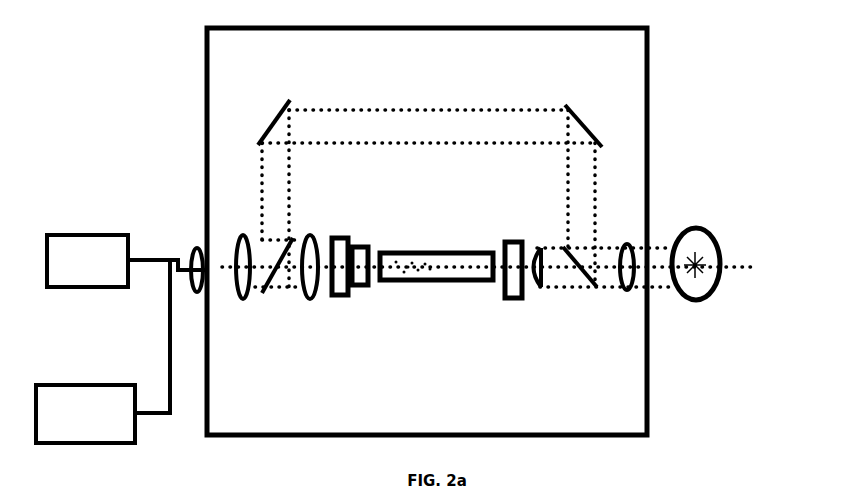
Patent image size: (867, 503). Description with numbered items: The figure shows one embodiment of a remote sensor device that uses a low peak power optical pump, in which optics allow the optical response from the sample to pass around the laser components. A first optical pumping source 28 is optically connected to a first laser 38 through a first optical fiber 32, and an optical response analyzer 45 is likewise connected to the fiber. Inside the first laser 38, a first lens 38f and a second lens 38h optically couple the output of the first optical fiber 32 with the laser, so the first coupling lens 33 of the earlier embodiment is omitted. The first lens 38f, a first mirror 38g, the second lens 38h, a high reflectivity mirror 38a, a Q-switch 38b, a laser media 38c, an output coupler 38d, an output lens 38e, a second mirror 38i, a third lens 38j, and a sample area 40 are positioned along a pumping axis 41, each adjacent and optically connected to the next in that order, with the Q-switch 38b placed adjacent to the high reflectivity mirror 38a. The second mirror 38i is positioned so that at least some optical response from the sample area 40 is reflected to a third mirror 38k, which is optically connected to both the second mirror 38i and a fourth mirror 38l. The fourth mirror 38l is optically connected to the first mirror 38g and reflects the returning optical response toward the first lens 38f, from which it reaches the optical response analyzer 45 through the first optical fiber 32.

The first optical pumping source 28 is at (87, 261).
The first optical fiber 32 is at (150, 259).
The first coupling lens 33 is at (196, 300).
The first laser 38 is at (652, 441).
The high reflectivity mirror 38a is at (351, 236).
The Q-switch 38b is at (357, 291).
The laser media 38c is at (433, 285).
The output coupler 38d is at (518, 235).
The output lens 38e is at (540, 292).
The first lens 38f is at (243, 303).
The first mirror 38g is at (282, 283).
The second lens 38h is at (313, 225).
The second mirror 38i is at (586, 292).
The third lens 38j is at (626, 292).
The third mirror 38k is at (580, 113).
The fourth mirror 38l is at (277, 108).
The sample area 40 is at (711, 233).
The pumping axis 41 is at (746, 273).
The optical response analyzer 45 is at (85, 414).